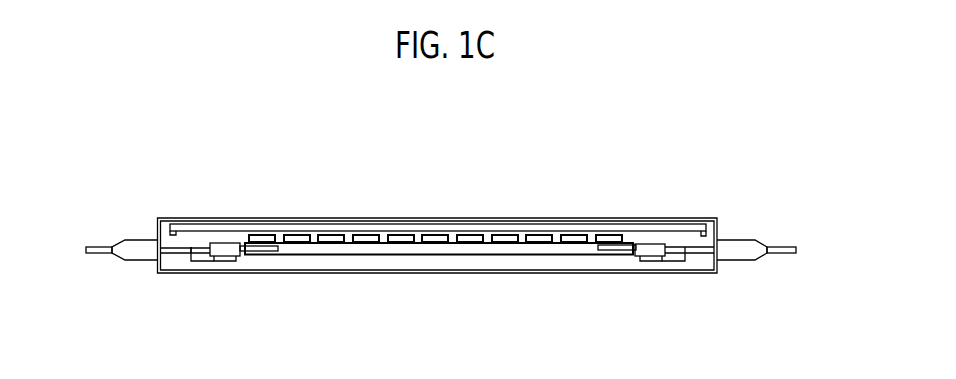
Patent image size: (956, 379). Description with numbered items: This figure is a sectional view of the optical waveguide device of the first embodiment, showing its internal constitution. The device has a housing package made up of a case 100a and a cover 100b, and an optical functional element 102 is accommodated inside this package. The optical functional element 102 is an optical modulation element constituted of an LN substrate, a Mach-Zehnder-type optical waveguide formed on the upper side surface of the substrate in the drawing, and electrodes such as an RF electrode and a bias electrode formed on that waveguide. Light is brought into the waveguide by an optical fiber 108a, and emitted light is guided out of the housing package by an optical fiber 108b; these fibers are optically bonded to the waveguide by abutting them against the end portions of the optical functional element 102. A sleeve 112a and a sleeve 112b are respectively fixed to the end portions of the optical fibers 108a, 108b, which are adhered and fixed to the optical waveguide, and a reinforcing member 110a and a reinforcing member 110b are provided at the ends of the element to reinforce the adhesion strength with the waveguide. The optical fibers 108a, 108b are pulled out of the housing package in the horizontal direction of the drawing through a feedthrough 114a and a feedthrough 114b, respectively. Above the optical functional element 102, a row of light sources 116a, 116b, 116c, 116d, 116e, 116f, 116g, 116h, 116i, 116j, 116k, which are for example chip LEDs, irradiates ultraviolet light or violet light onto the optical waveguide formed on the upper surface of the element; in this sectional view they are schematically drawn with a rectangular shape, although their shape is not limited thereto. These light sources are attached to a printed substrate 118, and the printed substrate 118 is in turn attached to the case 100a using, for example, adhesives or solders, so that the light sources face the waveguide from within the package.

The case 100a is at (420, 268).
The cover 100b is at (163, 219).
The optical functional element 102 is at (520, 256).
The optical fiber 108a is at (198, 247).
The optical fiber 108b is at (675, 246).
The reinforcing member 110a is at (260, 251).
The reinforcing member 110b is at (615, 251).
The sleeve 112a is at (225, 252).
The sleeve 112b is at (652, 255).
The feedthrough 114a is at (133, 243).
The feedthrough 114b is at (755, 247).
The light source 116a is at (265, 242).
The light source 116b is at (308, 242).
The light source 116c is at (335, 242).
The light source 116d is at (372, 242).
The light source 116e is at (407, 242).
The light source 116f is at (441, 242).
The light source 116g is at (476, 242).
The light source 116h is at (511, 242).
The light source 116i is at (545, 242).
The light source 116j is at (580, 242).
The light source 116k is at (614, 242).
The printed substrate 118 is at (638, 231).